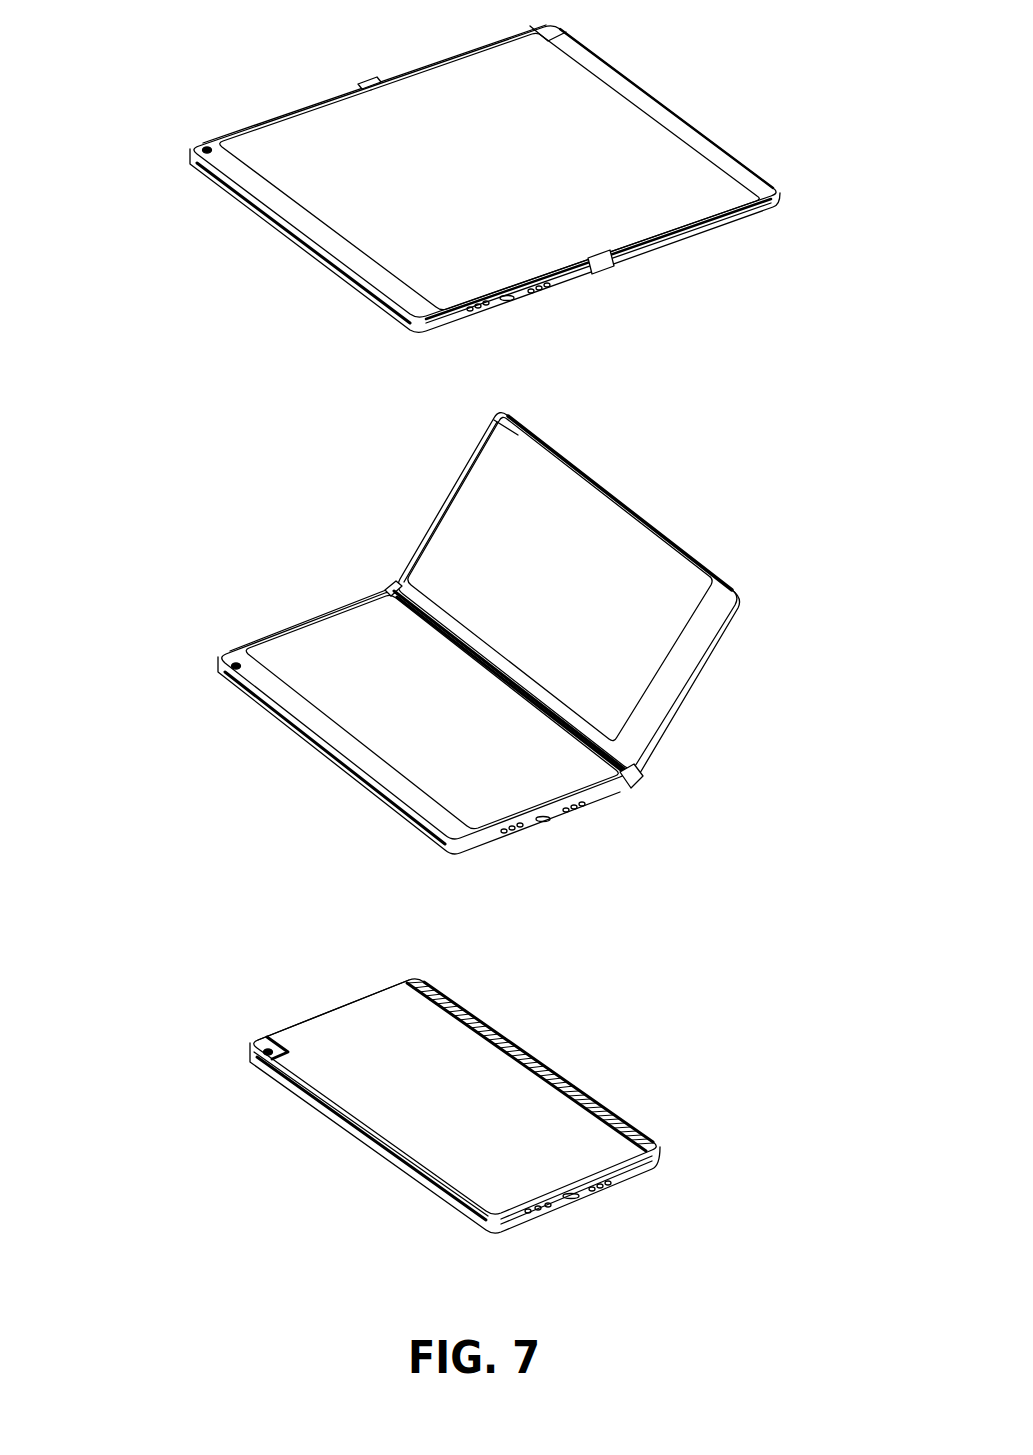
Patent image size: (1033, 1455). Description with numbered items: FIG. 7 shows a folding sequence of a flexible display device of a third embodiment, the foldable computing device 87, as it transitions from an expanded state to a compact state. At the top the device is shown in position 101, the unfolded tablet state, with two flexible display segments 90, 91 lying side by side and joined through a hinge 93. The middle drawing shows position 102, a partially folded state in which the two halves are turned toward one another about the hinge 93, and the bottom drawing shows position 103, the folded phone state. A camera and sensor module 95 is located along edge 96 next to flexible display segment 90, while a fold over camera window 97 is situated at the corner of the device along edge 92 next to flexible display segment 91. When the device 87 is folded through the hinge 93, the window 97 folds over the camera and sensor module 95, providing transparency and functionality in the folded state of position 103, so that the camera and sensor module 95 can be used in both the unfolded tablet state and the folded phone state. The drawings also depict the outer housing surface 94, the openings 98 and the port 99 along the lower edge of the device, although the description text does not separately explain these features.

The foldable computing device 87 is at (197, 50).
The flexible display segment 90 is at (298, 112).
The flexible display segment 91 is at (457, 55).
The edge 92 is at (727, 153).
The hinge 93 is at (363, 80).
The rear housing surface 94 is at (365, 1002).
The camera and sensor module 95 is at (204, 147).
The edge 96 is at (332, 264).
The fold over camera window 97 is at (551, 36).
The speaker openings 98 is at (486, 309).
The connector port 99 is at (512, 301).
The position 101 is at (692, 69).
The position 102 is at (686, 470).
The position 103 is at (630, 1037).